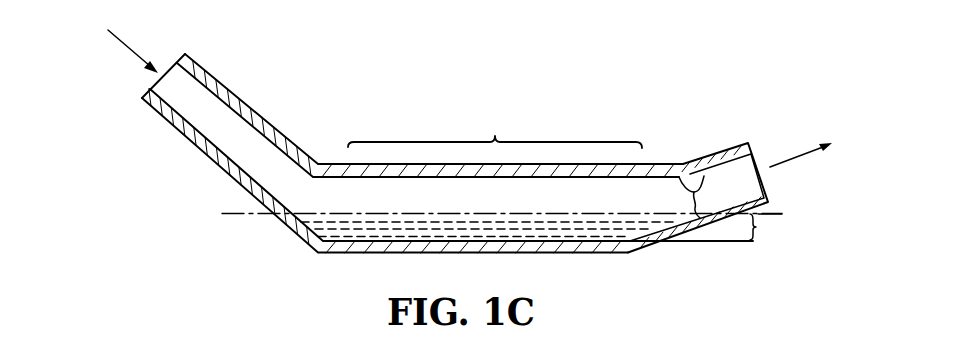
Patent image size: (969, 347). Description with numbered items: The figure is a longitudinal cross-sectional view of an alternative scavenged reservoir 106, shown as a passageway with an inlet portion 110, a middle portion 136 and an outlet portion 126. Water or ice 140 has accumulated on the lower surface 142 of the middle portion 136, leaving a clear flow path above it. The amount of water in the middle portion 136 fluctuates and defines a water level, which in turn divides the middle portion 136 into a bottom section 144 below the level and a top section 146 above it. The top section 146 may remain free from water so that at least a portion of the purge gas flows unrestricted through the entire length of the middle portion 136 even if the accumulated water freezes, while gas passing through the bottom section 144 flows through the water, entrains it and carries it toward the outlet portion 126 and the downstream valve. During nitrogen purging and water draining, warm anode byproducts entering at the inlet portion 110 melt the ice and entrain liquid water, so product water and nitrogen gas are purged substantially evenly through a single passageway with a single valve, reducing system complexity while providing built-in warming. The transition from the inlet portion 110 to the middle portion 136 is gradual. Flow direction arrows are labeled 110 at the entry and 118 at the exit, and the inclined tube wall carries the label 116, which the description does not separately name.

The scavenged reservoir 106 is at (443, 62).
The inlet portion 110 is at (125, 44).
The conduit tube 116 is at (170, 125).
The outlet flow direction 118 is at (793, 160).
The outlet portion 126 is at (735, 142).
The middle portion 136 is at (495, 128).
The water or ice 140 is at (377, 228).
The lower surface 142 is at (530, 254).
The bottom section 144 is at (756, 227).
The top section 146 is at (702, 172).